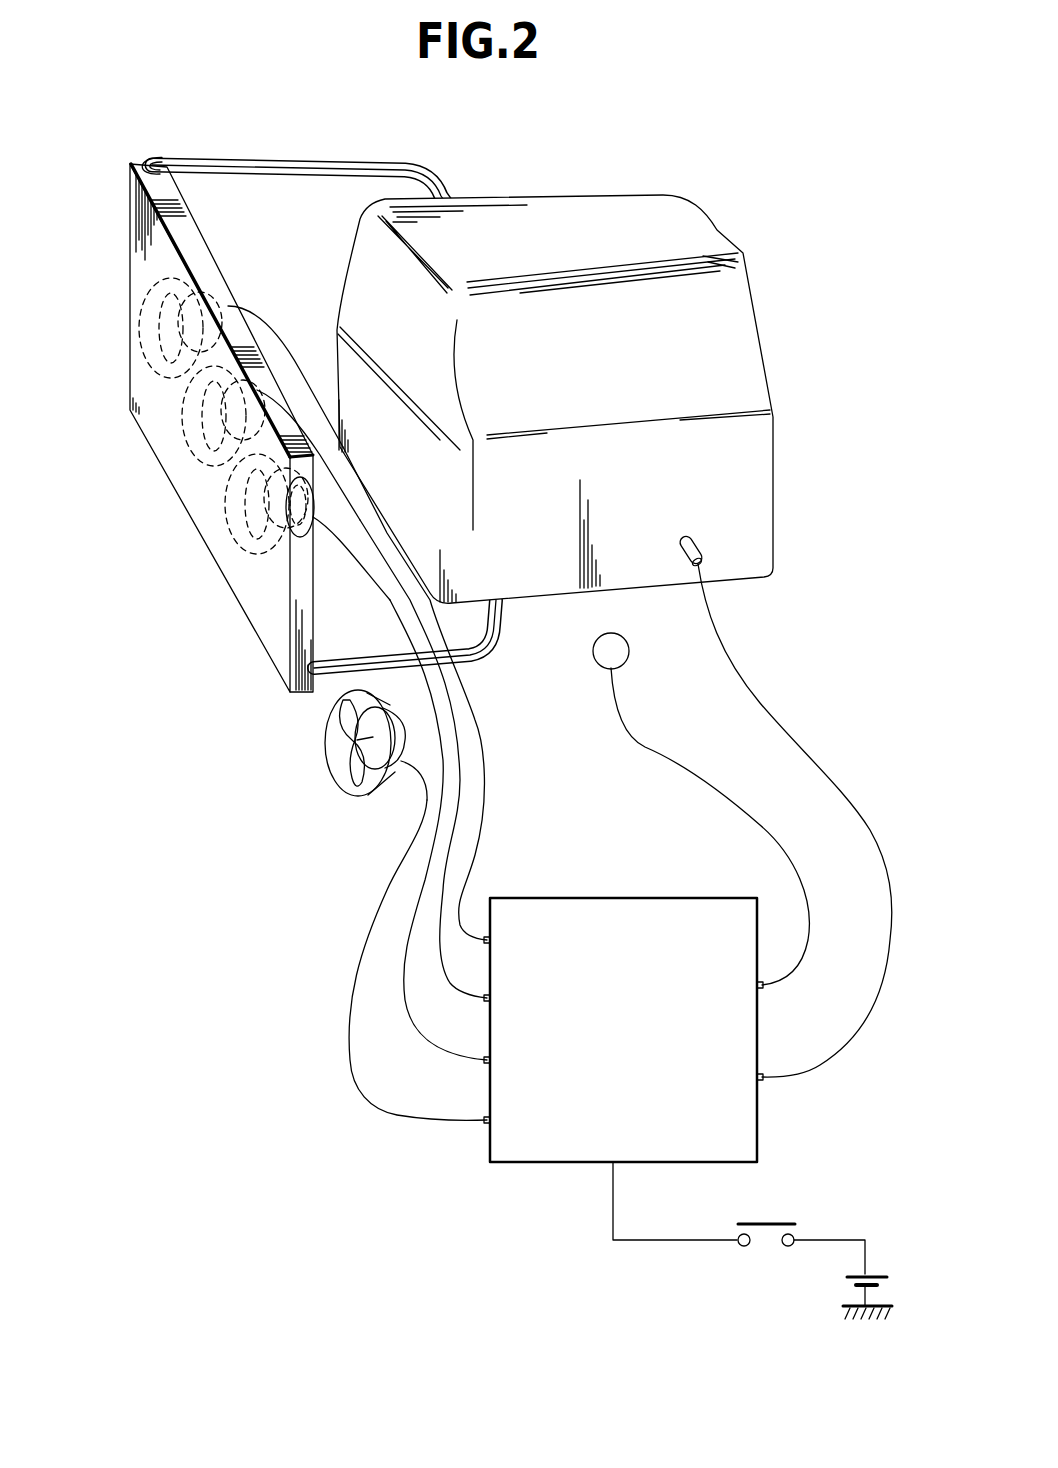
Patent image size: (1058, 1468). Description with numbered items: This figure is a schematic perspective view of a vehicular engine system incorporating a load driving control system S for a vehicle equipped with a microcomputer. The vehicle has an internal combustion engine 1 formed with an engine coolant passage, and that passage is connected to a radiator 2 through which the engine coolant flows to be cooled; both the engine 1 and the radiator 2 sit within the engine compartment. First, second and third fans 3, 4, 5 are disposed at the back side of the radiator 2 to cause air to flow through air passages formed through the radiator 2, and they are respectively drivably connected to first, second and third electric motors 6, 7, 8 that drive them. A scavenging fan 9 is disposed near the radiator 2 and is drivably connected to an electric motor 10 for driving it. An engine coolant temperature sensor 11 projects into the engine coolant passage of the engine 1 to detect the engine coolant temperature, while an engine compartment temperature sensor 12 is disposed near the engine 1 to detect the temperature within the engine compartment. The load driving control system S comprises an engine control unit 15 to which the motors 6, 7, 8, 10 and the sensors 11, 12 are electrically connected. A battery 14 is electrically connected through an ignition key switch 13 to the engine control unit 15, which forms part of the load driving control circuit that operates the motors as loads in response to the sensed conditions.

The internal combustion engine 1 is at (627, 208).
The radiator 2 is at (125, 199).
The first fan 3 is at (165, 360).
The second fan 4 is at (207, 443).
The third fan 5 is at (262, 527).
The first electric motor 6 is at (192, 297).
The second electric motor 7 is at (243, 390).
The third electric motor 8 is at (305, 535).
The scavenging fan 9 is at (358, 773).
The electric motor 10 is at (398, 761).
The engine coolant temperature sensor 11 is at (701, 553).
The engine compartment temperature sensor 12 is at (620, 655).
The ignition key switch 13 is at (777, 1222).
The battery 14 is at (892, 1284).
The engine control unit 15 is at (652, 897).
The load driving control system S is at (414, 1186).